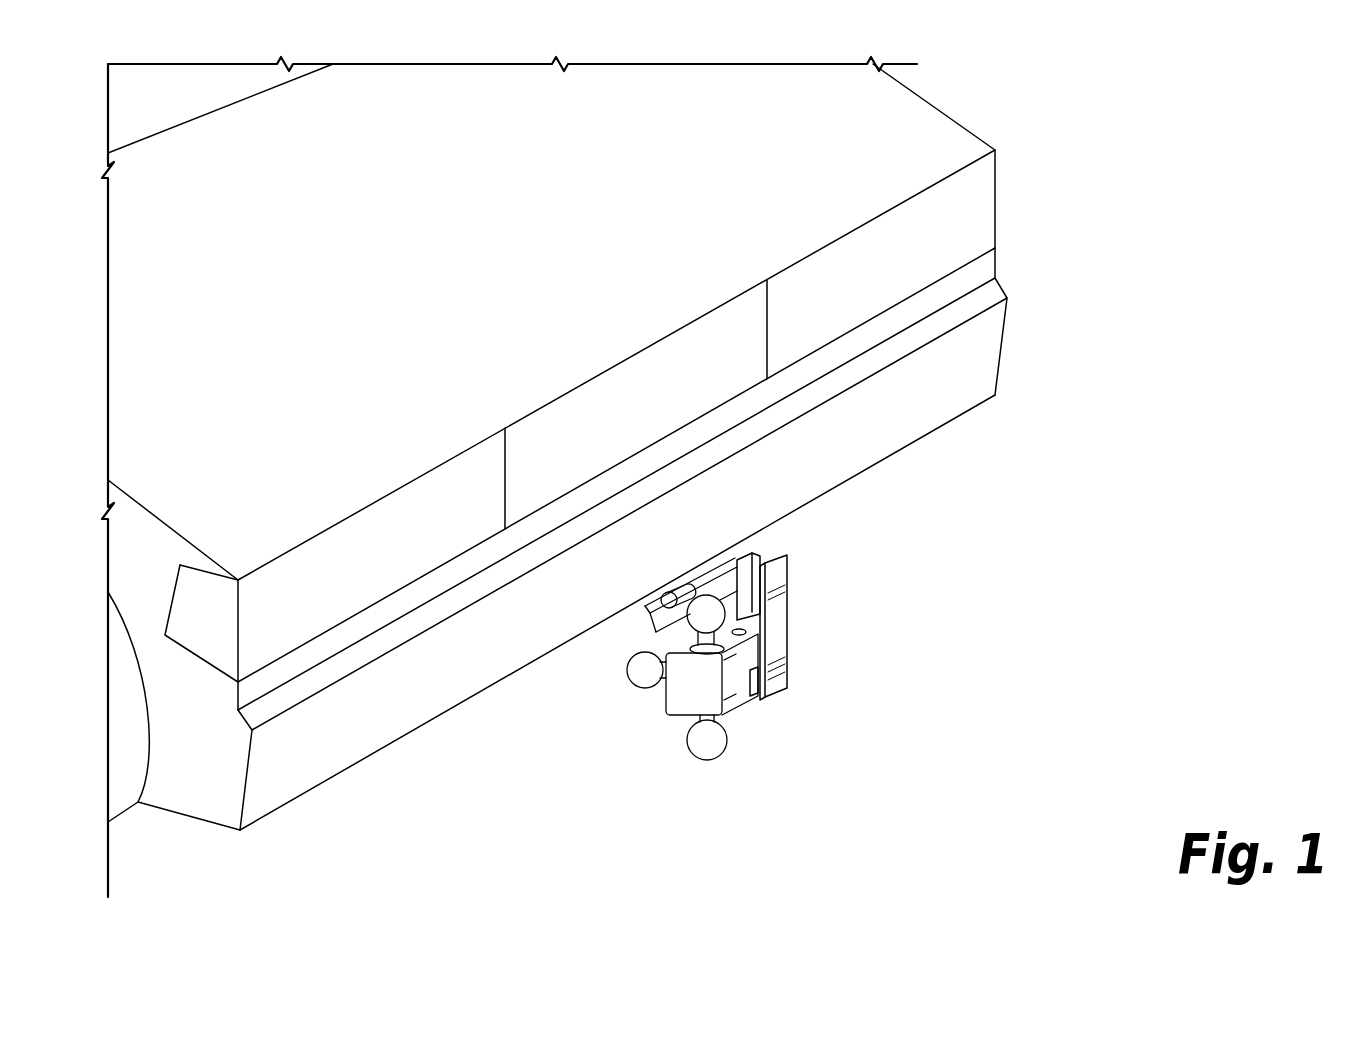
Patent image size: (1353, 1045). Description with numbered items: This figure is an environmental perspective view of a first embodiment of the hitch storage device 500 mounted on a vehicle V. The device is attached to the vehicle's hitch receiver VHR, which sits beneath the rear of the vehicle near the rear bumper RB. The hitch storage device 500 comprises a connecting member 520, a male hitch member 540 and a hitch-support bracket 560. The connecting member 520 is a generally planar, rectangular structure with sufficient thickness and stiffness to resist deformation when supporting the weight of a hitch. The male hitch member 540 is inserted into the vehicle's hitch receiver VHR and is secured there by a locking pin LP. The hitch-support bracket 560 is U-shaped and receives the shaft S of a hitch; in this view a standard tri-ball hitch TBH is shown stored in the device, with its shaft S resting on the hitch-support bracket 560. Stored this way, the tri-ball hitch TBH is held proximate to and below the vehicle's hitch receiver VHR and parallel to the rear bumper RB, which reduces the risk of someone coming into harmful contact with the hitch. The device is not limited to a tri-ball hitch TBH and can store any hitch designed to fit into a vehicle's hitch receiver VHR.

The vehicle V is at (318, 311).
The rear bumper RB is at (947, 390).
The vehicle's hitch receiver VHR is at (647, 613).
The locking pin LP is at (681, 591).
The tri-ball hitch TBH is at (682, 698).
The shaft S is at (733, 690).
The hitch storage device 500 is at (904, 605).
The connecting member 520 is at (782, 645).
The male hitch member 540 is at (760, 556).
The hitch-support bracket 560 is at (845, 703).